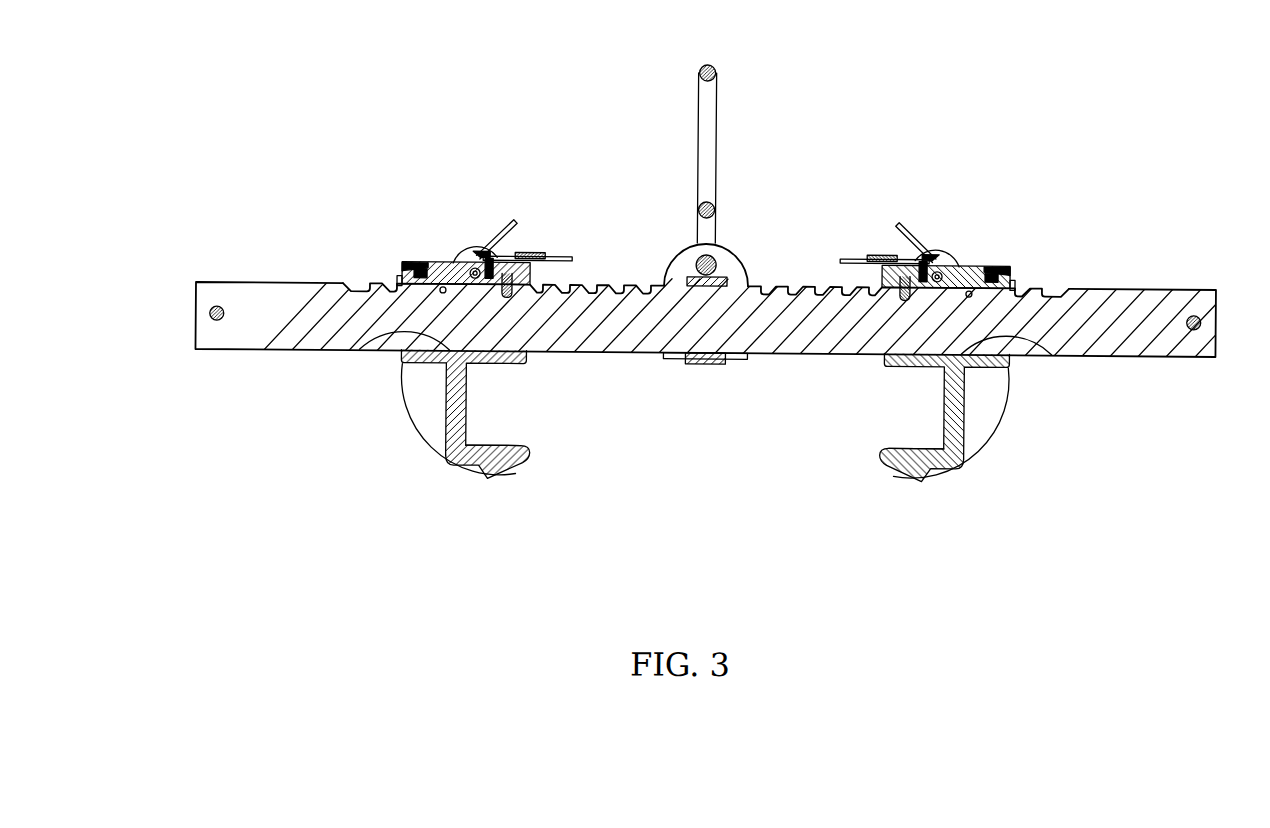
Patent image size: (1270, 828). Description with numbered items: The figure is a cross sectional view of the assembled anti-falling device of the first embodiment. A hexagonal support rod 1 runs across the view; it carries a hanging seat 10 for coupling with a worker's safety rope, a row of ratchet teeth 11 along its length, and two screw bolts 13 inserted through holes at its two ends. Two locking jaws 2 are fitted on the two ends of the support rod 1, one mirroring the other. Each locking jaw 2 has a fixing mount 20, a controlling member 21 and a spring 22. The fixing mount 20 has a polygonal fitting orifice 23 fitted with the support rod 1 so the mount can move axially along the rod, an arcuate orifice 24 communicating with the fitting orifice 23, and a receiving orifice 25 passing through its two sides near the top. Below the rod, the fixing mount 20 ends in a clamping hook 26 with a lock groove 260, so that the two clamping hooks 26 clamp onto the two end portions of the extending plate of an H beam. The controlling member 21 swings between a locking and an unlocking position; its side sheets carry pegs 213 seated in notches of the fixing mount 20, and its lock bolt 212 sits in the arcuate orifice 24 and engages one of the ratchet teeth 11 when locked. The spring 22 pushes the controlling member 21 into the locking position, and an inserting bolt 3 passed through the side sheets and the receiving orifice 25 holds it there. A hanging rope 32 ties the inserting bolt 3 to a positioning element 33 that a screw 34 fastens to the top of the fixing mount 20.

The support rod 1 is at (285, 288).
The hanging seat 10 is at (698, 69).
The ratchet teeth 11 is at (318, 237).
The screw bolts 13 is at (216, 320).
The locking jaws 2 is at (347, 562).
The fixing mount 20 is at (350, 398).
The controlling member 21 is at (410, 214).
The spring 22 is at (363, 236).
The fitting orifice 23 is at (317, 371).
The arcuate orifice 24 is at (582, 263).
The receiving orifice 25 is at (447, 226).
The clamping hook 26 is at (520, 508).
The lock groove 260 is at (590, 460).
The inserting bolts 3 is at (484, 197).
The hanging rope 32 is at (527, 198).
The positioning element 33 is at (568, 225).
The screw 34 is at (508, 174).
The lock bolt 212 is at (553, 365).
The pegs 213 is at (445, 291).